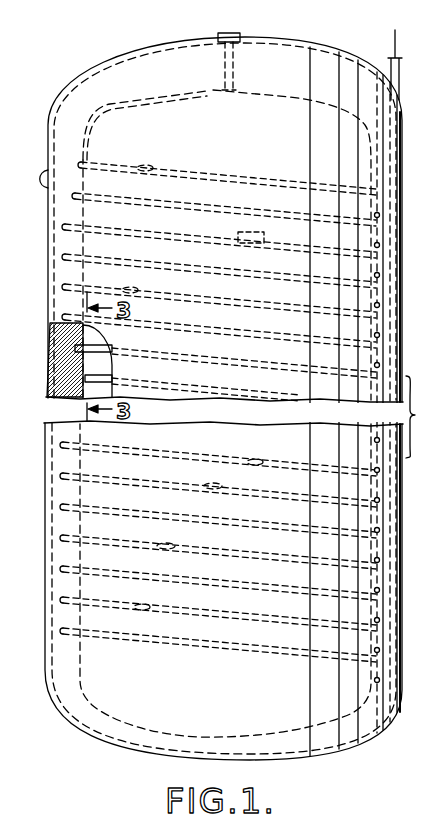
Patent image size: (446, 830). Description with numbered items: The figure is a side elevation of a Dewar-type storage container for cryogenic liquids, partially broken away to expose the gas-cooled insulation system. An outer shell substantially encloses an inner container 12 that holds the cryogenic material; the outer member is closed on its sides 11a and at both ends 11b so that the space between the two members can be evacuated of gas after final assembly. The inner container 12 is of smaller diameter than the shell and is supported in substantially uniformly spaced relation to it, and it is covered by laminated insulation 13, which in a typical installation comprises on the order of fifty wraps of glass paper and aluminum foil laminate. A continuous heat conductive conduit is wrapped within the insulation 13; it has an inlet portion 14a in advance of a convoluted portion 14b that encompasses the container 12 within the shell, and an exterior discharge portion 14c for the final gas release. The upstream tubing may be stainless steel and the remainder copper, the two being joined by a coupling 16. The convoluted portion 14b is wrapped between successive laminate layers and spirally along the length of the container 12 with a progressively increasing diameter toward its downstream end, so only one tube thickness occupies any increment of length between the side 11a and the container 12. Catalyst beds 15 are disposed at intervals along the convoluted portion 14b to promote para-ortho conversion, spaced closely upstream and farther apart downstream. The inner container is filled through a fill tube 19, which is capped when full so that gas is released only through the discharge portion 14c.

The sides of outer member 11a is at (50, 173).
The ends of outer member 11b is at (334, 56).
The inner container 12 is at (254, 91).
The laminated insulation 13 is at (52, 343).
The inlet portion 14a is at (113, 101).
The convoluted portion 14b is at (82, 398).
The exterior discharge portion 14c is at (402, 74).
The catalyst beds 15 is at (184, 166).
The coupling 16 is at (262, 241).
The fill tube 19 is at (222, 61).